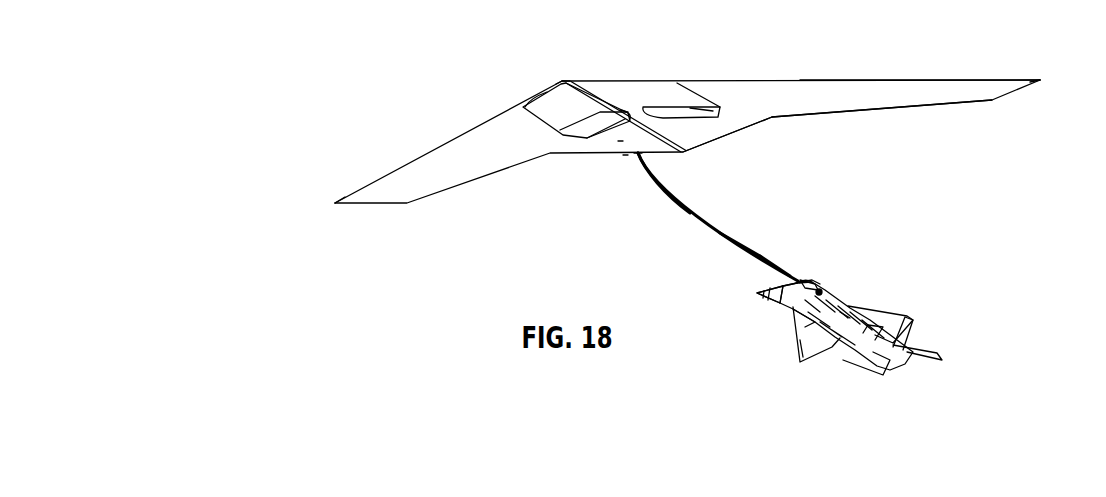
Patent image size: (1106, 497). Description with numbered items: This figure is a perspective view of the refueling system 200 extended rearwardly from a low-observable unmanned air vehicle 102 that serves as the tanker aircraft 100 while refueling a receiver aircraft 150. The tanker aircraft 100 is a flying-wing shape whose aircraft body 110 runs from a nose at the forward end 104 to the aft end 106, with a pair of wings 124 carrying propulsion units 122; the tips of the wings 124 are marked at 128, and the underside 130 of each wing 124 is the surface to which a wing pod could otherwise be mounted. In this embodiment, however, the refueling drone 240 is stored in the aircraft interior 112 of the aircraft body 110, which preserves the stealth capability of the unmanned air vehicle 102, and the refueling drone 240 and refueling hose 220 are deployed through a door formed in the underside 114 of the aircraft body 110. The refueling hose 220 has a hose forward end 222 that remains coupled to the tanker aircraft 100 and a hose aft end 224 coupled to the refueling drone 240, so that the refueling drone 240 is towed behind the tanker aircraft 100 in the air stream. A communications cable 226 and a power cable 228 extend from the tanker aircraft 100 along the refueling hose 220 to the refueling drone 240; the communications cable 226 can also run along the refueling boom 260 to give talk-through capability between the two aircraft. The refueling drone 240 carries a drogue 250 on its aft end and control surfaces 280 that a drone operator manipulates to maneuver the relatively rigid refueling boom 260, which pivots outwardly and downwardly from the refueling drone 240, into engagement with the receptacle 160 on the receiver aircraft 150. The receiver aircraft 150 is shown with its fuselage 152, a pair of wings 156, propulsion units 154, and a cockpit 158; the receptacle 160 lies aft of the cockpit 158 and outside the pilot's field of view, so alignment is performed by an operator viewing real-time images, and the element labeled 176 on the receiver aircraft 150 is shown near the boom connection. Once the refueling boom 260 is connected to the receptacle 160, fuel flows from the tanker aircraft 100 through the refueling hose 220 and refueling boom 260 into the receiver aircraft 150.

The tanker aircraft 100 is at (407, 163).
The unmanned air vehicle 102 is at (762, 80).
The forward end 104 is at (563, 77).
The aft end 106 is at (684, 152).
The aircraft body 110 is at (727, 137).
The aircraft interior 112 is at (620, 141).
The underside 114 is at (625, 155).
The propulsion units 122 is at (547, 112).
The wings 124 is at (458, 135).
The wing tip 128 is at (347, 208).
The underside of the wing 130 is at (860, 109).
The receiver aircraft 150 is at (927, 333).
The fuselage 152 is at (842, 352).
The propulsion units 154 is at (797, 322).
The wings 156 is at (803, 357).
The cockpit 158 is at (783, 302).
The receptacle 160 is at (820, 350).
The refueling receptacle 176 is at (847, 315).
The refueling system 200 is at (712, 228).
The refueling hose 220 is at (712, 228).
The hose forward end 222 is at (638, 156).
The hose aft end 224 is at (788, 275).
The communications cable 226 is at (740, 244).
The power cable 228 is at (740, 244).
The refueling drone 240 is at (808, 278).
The drogue 250 is at (823, 292).
The refueling boom 260 is at (795, 281).
The control surfaces 280 is at (820, 282).